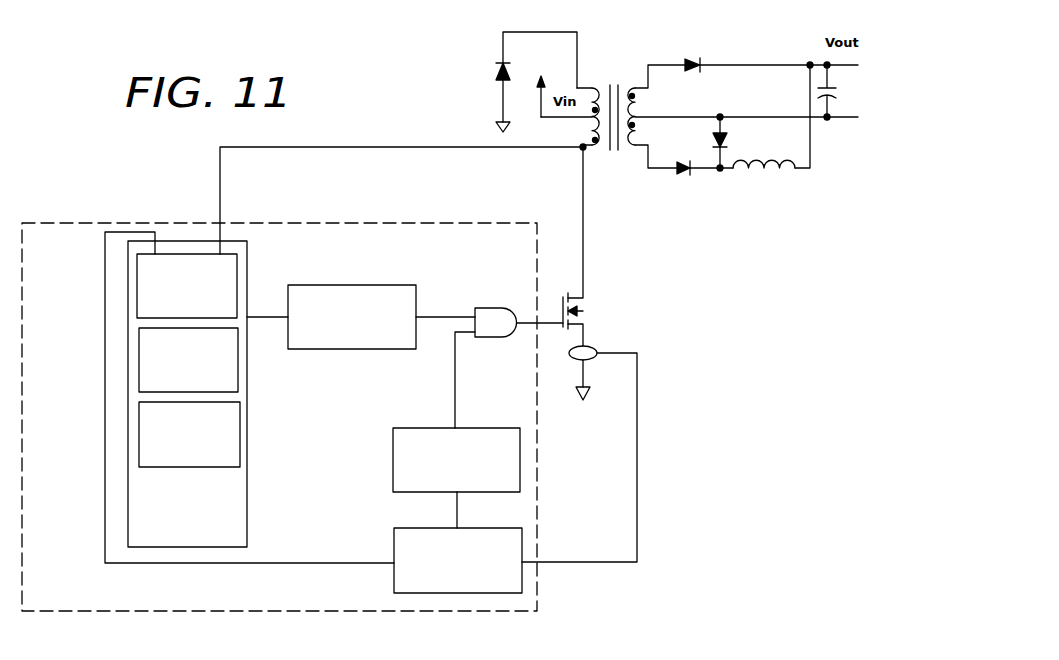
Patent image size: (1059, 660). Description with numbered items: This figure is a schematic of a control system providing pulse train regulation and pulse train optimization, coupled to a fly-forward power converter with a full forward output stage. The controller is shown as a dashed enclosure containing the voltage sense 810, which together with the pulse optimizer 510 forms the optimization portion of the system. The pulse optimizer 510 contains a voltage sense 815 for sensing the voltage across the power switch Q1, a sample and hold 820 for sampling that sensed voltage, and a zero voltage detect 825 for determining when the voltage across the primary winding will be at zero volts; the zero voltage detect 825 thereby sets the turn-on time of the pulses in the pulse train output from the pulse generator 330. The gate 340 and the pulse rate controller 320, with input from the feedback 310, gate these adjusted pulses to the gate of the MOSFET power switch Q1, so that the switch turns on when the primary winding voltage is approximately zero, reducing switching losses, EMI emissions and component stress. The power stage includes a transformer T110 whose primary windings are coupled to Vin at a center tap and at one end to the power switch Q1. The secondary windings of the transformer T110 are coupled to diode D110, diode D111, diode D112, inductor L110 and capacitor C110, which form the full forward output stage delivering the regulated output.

The voltage sense 810 is at (80, 222).
The pulse optimizer 510 is at (148, 423).
The voltage sense 815 is at (137, 288).
The sample and hold 820 is at (139, 362).
The zero voltage detect 825 is at (139, 435).
The pulse generator 330 is at (352, 349).
The gate 340 is at (500, 337).
The pulse rate controller 320 is at (393, 460).
The feedback 310 is at (394, 546).
The power switch Q1 is at (594, 273).
The transformer T110 is at (606, 125).
The diode D110 is at (694, 53).
The diode D111 is at (743, 142).
The diode D112 is at (687, 158).
The inductor L110 is at (764, 176).
The capacitor C110 is at (847, 91).